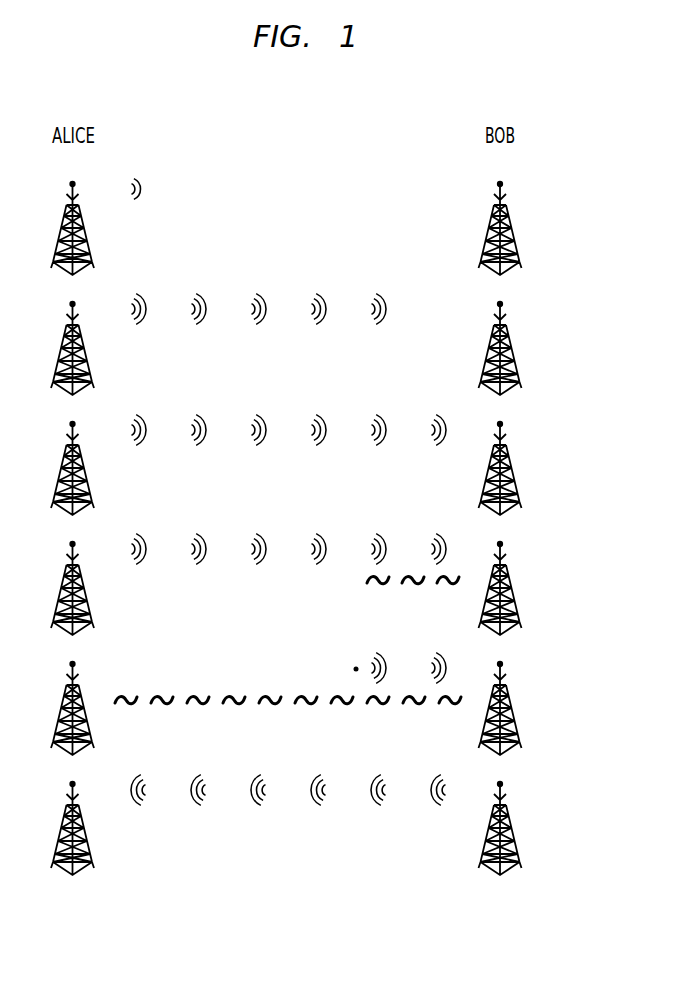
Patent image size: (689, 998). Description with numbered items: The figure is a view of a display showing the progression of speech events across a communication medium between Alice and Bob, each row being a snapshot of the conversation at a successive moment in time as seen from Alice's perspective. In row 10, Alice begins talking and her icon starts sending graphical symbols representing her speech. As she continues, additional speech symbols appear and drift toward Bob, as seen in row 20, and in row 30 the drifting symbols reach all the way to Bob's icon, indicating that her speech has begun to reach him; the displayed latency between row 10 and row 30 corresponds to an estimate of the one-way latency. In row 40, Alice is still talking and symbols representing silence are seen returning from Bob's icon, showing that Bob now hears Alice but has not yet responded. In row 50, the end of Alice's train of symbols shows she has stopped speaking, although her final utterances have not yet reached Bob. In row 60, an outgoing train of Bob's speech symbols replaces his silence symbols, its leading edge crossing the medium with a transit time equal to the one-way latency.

The row 10 is at (508, 213).
The row 20 is at (508, 333).
The row 30 is at (508, 453).
The row 40 is at (508, 573).
The row 50 is at (508, 693).
The row 60 is at (508, 813).